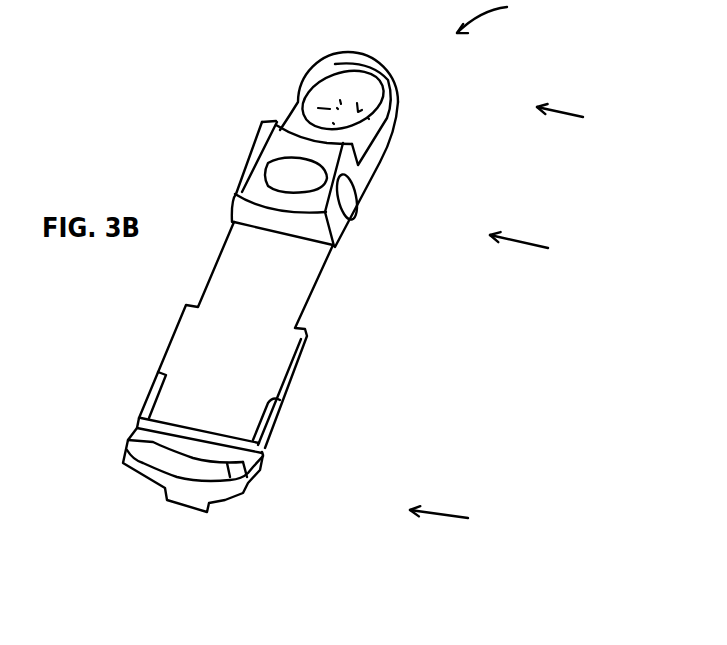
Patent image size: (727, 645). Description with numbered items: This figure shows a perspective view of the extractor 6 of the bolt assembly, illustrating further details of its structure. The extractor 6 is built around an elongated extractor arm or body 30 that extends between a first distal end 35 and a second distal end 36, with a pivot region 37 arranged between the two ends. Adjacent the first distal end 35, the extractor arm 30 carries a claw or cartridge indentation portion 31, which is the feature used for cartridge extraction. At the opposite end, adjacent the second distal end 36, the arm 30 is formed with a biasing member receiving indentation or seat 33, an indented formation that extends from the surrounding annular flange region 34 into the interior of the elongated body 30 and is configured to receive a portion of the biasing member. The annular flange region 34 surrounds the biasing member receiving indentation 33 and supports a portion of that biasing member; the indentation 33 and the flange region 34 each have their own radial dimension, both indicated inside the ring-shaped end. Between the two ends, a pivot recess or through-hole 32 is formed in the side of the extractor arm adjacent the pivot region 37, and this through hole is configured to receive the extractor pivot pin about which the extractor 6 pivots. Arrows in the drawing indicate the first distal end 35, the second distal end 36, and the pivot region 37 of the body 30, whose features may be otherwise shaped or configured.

The extractor 6 is at (489, 17).
The elongated extractor arm or body 30 is at (318, 315).
The claw or cartridge indentation portion 31 is at (268, 465).
The pivot recess or through-hole 32 is at (352, 200).
The biasing member receiving indentation 33 is at (328, 58).
The annular flange region 34 is at (393, 91).
The first distal end 35 is at (461, 521).
The second distal end 36 is at (583, 119).
The pivot region 37 is at (390, 135).